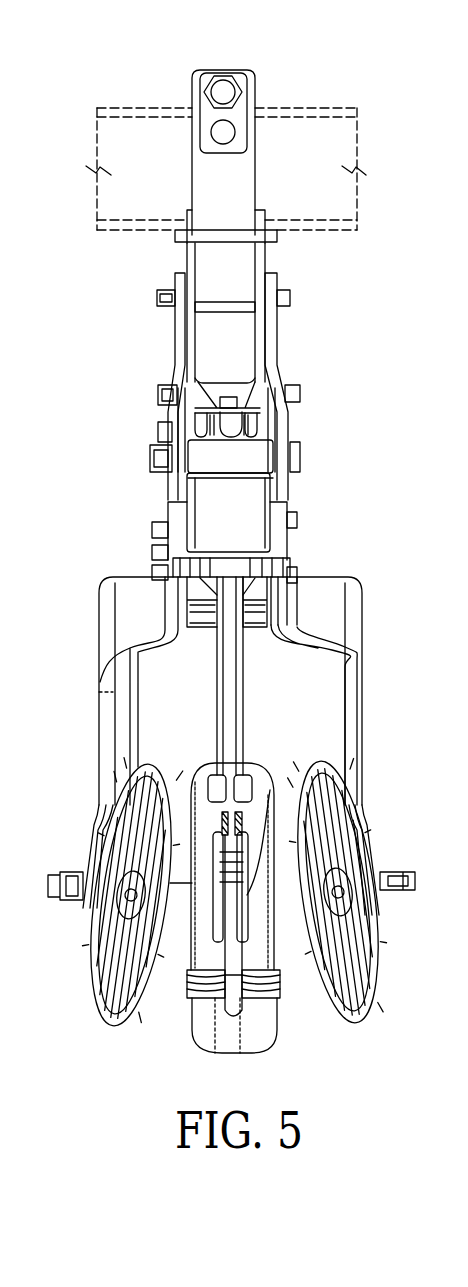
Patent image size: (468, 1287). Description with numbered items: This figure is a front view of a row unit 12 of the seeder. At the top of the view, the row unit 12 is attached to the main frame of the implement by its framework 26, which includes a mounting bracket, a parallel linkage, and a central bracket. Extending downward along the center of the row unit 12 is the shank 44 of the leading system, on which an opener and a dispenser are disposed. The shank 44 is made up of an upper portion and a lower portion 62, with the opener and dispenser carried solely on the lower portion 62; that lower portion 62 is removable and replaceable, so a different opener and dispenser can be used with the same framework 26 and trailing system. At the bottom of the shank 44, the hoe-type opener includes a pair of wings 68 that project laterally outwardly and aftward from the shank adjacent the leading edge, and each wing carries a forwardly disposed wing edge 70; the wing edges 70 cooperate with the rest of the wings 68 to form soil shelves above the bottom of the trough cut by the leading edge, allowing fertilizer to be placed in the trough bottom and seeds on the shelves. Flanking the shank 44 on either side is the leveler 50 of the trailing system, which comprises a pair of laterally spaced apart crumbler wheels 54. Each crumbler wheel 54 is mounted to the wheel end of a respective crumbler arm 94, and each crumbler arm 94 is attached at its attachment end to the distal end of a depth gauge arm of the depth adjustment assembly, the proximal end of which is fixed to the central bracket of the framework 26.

The row unit 12 is at (306, 70).
The framework 26 is at (270, 262).
The shank 44 is at (248, 738).
The leveler 50 is at (100, 1048).
The crumbler wheels 54 is at (93, 997).
The lower portion 62 is at (237, 1053).
The wings 68 is at (223, 978).
The wing edges 70 is at (200, 1000).
The crumbler arm 94 is at (102, 733).